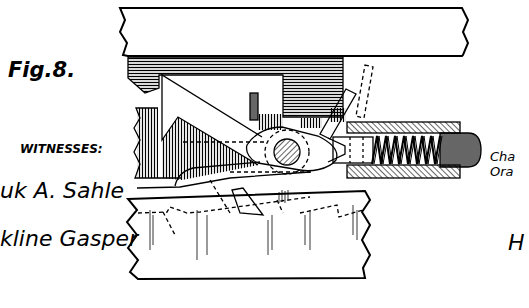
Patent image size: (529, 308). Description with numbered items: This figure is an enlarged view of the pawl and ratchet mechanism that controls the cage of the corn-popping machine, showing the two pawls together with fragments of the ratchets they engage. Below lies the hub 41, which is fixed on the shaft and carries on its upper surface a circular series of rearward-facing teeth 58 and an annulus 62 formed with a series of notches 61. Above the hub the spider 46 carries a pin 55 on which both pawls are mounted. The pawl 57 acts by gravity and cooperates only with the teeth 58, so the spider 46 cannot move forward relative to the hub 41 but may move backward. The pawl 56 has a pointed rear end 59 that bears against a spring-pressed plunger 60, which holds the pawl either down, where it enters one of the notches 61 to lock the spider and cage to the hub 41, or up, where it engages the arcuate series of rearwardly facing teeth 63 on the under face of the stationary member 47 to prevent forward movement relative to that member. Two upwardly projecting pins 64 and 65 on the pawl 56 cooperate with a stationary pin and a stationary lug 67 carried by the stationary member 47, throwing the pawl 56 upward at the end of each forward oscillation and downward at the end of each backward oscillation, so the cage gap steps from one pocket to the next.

The hub 41 is at (147, 257).
The spider 46 is at (137, 127).
The stationary member 47 is at (461, 42).
The pin 55 is at (312, 229).
The pawl 56 is at (207, 111).
The pawl 57 is at (182, 187).
The teeth 58 is at (160, 226).
The pointed rear end 59 is at (355, 178).
The spring-pressed plunger 60 is at (375, 133).
The notches 61 is at (258, 220).
The annulus 62 is at (364, 252).
The teeth 63 is at (130, 82).
The pin 64 is at (363, 97).
The pin 65 is at (257, 99).
The stationary lug 67 is at (286, 127).